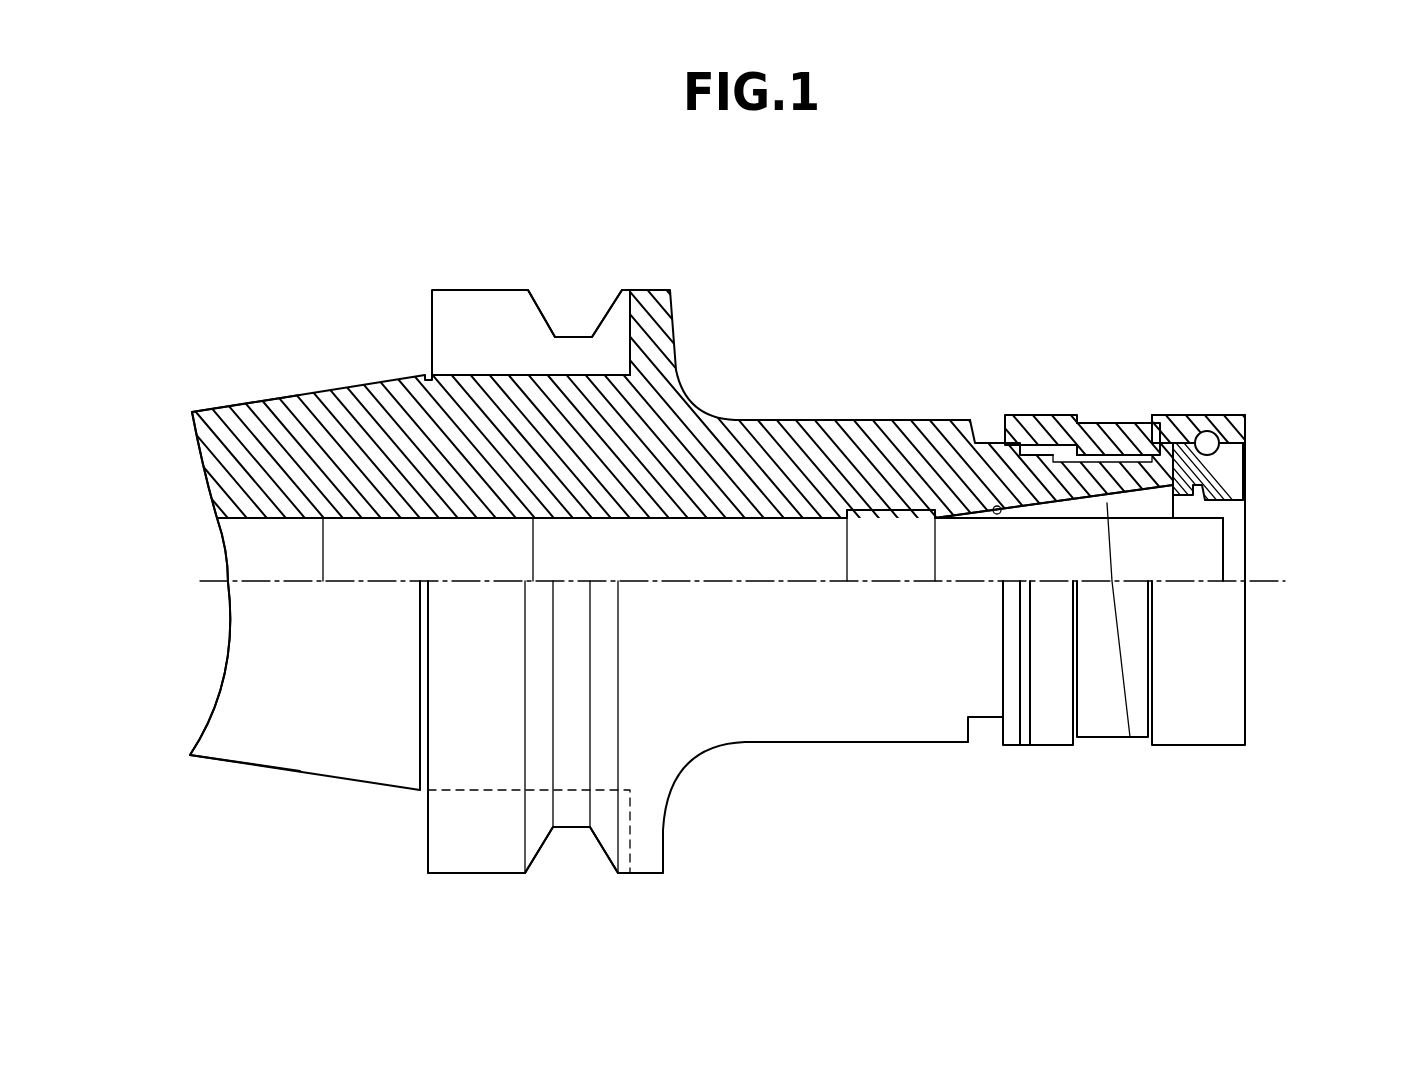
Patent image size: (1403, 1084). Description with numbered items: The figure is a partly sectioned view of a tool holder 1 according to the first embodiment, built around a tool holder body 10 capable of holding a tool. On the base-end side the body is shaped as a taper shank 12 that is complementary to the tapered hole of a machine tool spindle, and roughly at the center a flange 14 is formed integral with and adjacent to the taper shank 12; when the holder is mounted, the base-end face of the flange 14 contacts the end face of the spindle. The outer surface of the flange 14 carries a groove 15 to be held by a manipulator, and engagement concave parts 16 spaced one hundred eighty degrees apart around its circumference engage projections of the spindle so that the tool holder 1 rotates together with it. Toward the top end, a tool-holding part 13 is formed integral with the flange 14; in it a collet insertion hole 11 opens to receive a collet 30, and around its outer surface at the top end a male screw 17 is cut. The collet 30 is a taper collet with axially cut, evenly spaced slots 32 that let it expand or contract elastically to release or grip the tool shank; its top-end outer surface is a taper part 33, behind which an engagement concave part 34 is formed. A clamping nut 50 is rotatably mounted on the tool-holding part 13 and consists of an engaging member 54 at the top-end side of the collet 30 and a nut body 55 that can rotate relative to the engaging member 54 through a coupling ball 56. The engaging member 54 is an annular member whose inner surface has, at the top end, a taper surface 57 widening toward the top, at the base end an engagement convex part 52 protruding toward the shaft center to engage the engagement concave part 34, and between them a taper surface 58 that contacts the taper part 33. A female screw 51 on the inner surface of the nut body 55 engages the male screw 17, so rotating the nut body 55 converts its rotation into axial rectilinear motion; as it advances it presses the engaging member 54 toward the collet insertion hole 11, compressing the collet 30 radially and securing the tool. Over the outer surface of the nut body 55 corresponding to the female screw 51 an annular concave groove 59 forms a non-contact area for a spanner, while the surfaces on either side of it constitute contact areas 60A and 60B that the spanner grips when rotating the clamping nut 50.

The tool holder 1 is at (1052, 248).
The tool holder body 10 is at (795, 412).
The collet insertion hole 11 is at (997, 505).
The taper shank 12 is at (240, 400).
The tool-holding part 13 is at (880, 418).
The flange 14 is at (655, 300).
The groove 15 is at (572, 333).
The engagement concave parts 16 is at (468, 307).
The male screw 17 is at (1122, 423).
The collet 30 is at (1210, 513).
The slots 32 is at (1130, 737).
The taper part 33 is at (1215, 443).
The engagement concave part 34 is at (1177, 522).
The clamping nut 50 is at (1178, 410).
The female screw 51 is at (1082, 425).
The engagement convex part 52 is at (1158, 415).
The engaging member 54 is at (1245, 485).
The nut body 55 is at (1020, 415).
The coupling ball 56 is at (1240, 415).
The taper surface 57 is at (1225, 500).
The taper surface 58 is at (1245, 472).
The annular concave groove 59 is at (1097, 737).
The contact area 60A is at (1197, 745).
The contact area 60B is at (1047, 745).